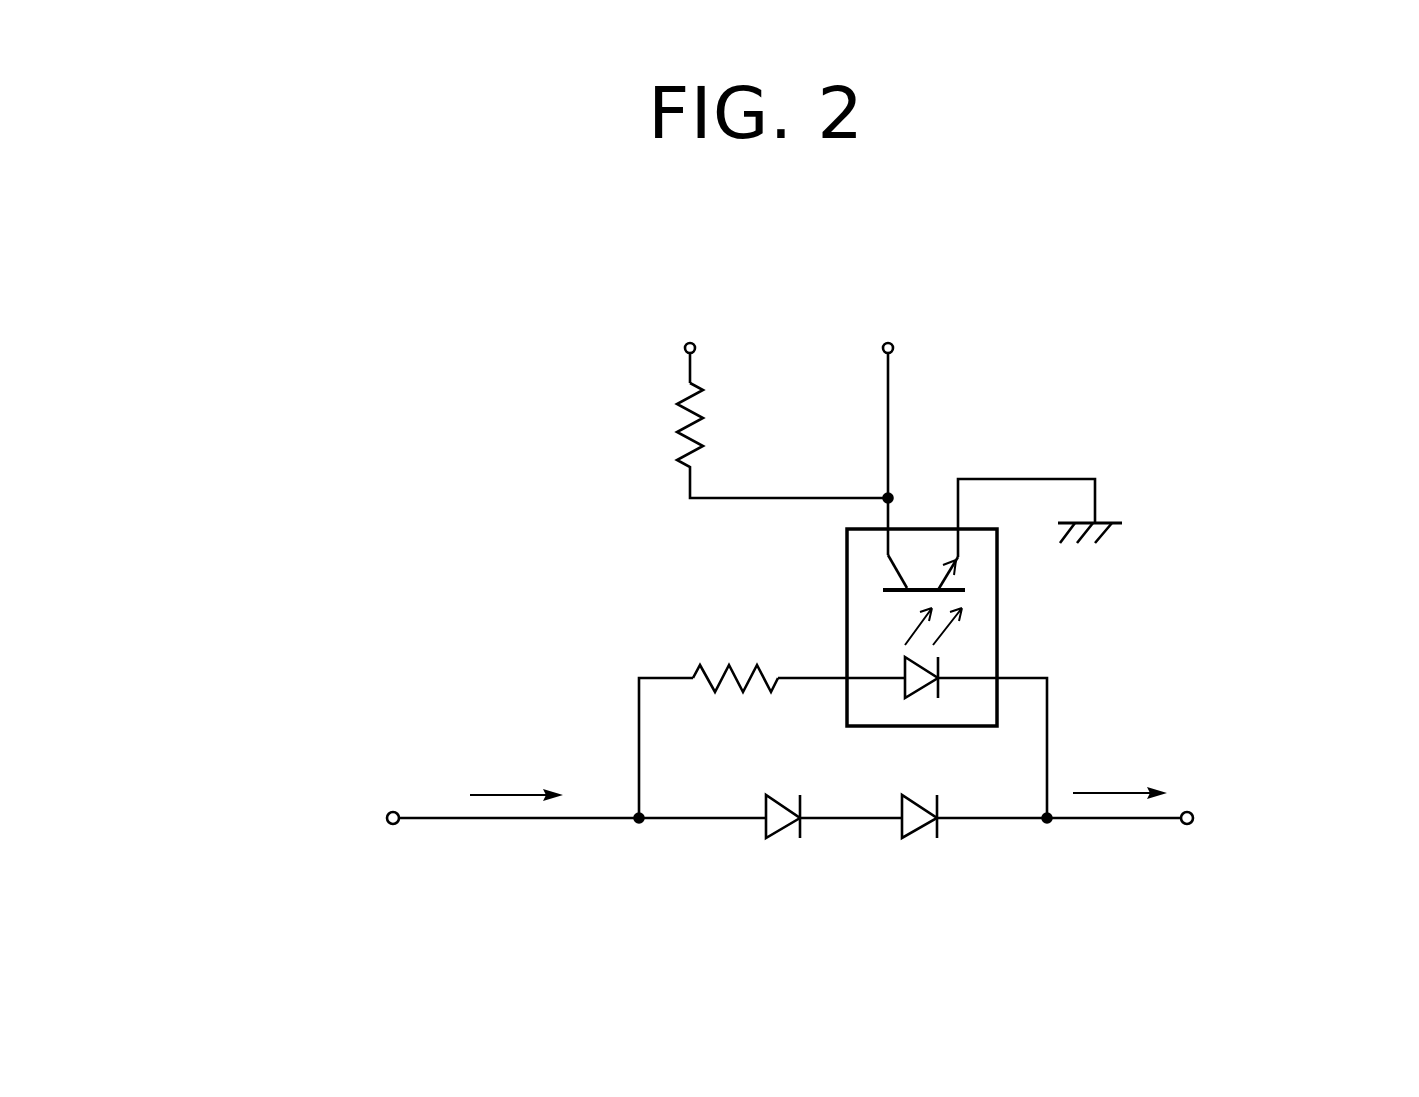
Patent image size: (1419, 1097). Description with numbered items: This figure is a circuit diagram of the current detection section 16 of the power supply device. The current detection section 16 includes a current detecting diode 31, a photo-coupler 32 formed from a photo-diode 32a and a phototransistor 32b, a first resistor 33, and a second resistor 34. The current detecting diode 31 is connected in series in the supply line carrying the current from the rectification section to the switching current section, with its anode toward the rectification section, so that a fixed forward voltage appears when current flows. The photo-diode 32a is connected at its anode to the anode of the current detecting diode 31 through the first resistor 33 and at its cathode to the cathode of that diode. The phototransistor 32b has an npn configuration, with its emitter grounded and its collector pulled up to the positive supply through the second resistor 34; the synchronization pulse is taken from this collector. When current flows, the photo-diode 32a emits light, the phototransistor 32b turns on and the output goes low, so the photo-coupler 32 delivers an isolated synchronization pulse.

The current detection section 16 is at (1142, 373).
The current detecting diode 31 is at (751, 855).
The photo-coupler 32 is at (847, 568).
The photo-diode 32a is at (943, 665).
The phototransistor 32b is at (960, 574).
The first resistor 33 is at (729, 665).
The second resistor 34 is at (680, 418).